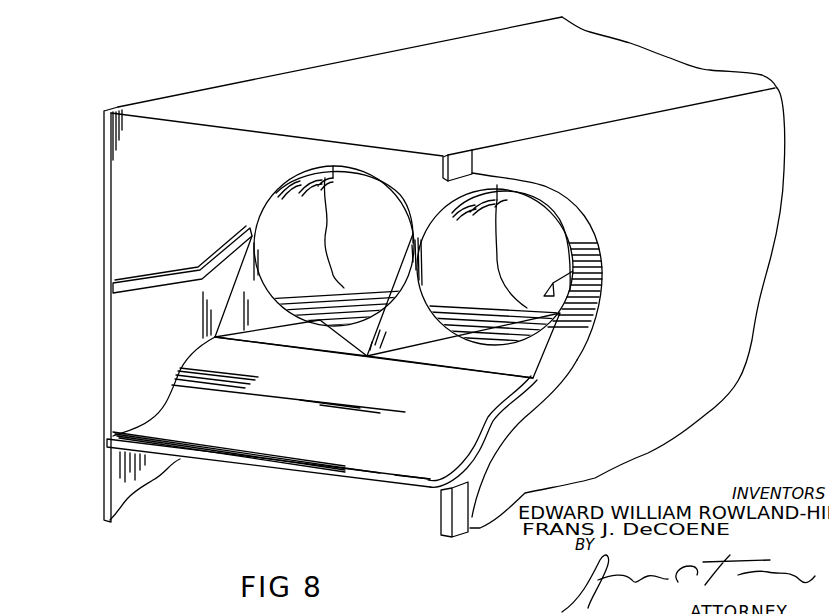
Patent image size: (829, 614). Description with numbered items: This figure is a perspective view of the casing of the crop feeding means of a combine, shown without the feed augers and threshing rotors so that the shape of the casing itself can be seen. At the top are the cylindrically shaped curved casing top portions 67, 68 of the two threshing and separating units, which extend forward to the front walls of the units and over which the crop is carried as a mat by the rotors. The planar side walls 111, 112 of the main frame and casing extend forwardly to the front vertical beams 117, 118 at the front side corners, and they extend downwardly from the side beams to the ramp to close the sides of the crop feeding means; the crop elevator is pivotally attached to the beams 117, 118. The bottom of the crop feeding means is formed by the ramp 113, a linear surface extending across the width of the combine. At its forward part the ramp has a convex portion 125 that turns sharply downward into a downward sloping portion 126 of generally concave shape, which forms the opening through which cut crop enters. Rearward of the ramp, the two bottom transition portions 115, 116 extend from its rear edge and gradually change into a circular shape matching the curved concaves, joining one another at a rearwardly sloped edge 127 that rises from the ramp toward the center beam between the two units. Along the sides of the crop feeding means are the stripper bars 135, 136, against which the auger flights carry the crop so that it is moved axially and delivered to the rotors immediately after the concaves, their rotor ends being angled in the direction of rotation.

The curved casing top portion 67 is at (355, 165).
The curved casing top portion 68 is at (573, 217).
The side wall 111 is at (125, 397).
The side wall 112 is at (618, 421).
The ramp 113 is at (280, 462).
The bottom transition portion 115 is at (315, 335).
The bottom transition portion 116 is at (450, 357).
The front vertical beam 117 is at (102, 325).
The front vertical beam 118 is at (442, 523).
The convex portion 125 is at (502, 430).
The downward sloping portion 126 is at (390, 463).
The rearwardly sloped edge 127 is at (387, 313).
The stripper bar 135 is at (182, 272).
The stripper bar 136 is at (563, 274).